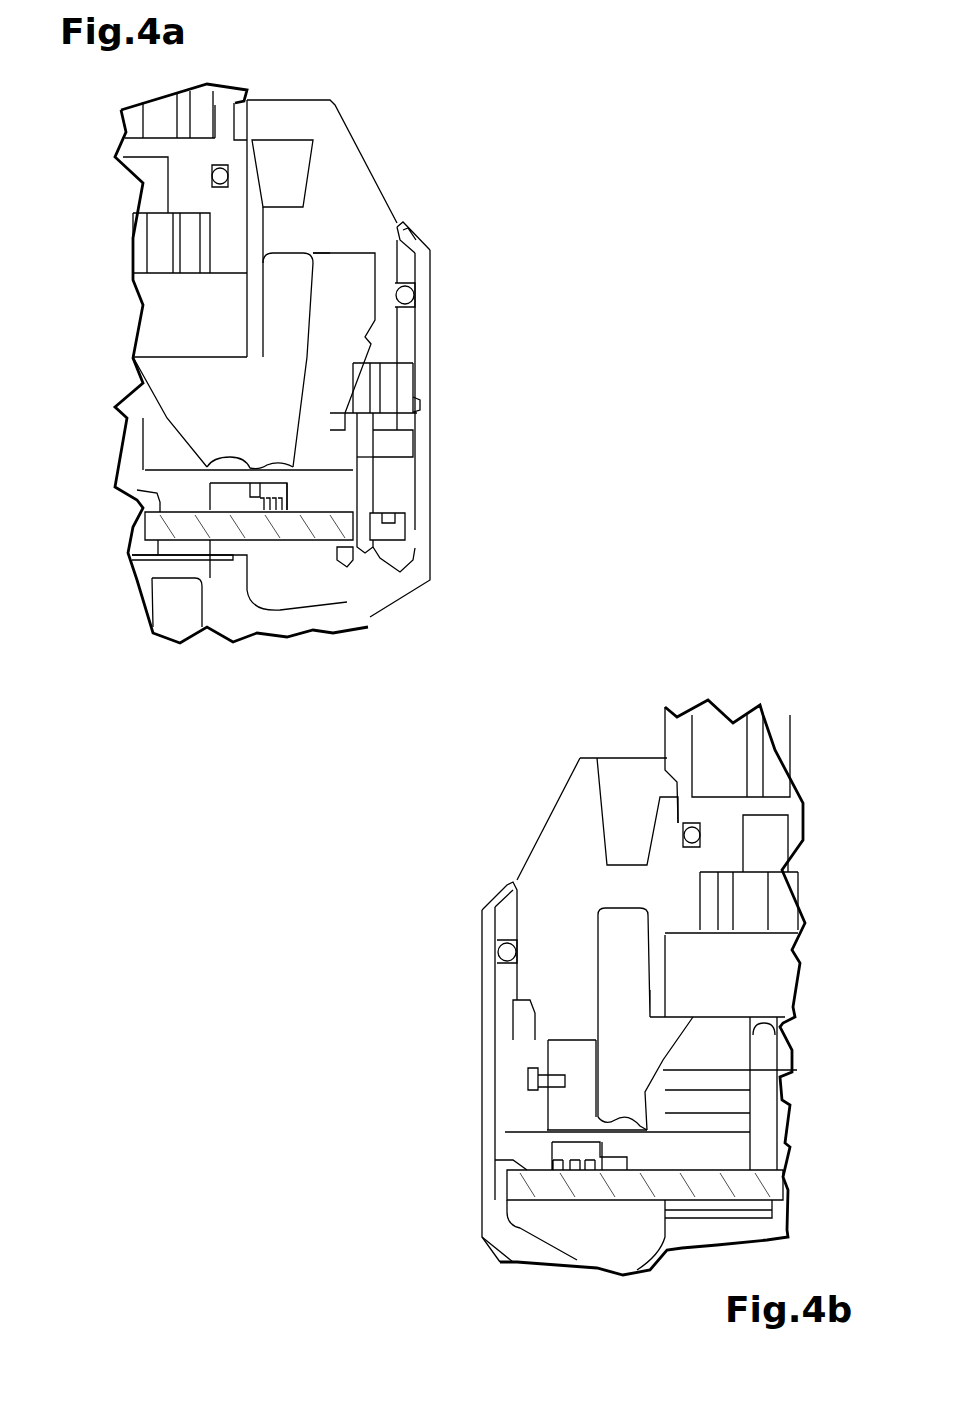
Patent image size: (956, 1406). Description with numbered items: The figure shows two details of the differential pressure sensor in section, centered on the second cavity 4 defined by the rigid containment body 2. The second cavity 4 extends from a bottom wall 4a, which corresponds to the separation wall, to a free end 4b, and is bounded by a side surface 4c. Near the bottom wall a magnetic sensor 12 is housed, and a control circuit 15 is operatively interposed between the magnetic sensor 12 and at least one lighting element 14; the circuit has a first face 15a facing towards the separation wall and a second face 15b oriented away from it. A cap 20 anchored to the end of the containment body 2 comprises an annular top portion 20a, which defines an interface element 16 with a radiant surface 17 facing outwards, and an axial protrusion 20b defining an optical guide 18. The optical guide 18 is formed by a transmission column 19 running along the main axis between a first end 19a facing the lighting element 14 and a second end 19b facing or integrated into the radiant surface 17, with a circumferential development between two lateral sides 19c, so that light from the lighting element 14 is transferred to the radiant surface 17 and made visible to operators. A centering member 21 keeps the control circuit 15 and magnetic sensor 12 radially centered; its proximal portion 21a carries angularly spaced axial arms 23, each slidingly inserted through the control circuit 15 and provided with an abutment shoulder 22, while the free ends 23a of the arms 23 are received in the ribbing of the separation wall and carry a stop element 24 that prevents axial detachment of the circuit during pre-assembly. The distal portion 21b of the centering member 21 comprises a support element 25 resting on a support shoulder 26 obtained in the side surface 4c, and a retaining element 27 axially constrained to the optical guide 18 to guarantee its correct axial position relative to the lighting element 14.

In FIG. 4A, the containment body 2 is at (436, 327).
In FIG. 4B, the containment body 2 is at (497, 1252).
In FIG. 4A, the second cavity 4 is at (436, 273).
In FIG. 4B, the second cavity 4 is at (499, 1084).
In FIG. 4A, the bottom wall 4a is at (240, 512).
In FIG. 4B, the bottom wall 4a is at (570, 1260).
In FIG. 4A, the free end 4b is at (408, 240).
In FIG. 4B, the free end 4b is at (500, 907).
In FIG. 4A, the side surface 4c is at (411, 400).
In FIG. 4B, the side surface 4c is at (505, 1017).
In FIG. 4A, the magnetic sensor 12 is at (145, 548).
In FIG. 4B, the magnetic sensor 12 is at (767, 1205).
In FIG. 4A, the lighting element 14 is at (210, 540).
In FIG. 4B, the lighting element 14 is at (570, 1150).
In FIG. 4A, the control circuit 15 is at (316, 548).
In FIG. 4B, the control circuit 15 is at (570, 1200).
In FIG. 4A, the first face 15a is at (208, 540).
In FIG. 4B, the first face 15a is at (523, 1200).
In FIG. 4A, the second face 15b is at (140, 493).
In FIG. 4B, the second face 15b is at (527, 1170).
In FIG. 4B, the interface element 16 is at (617, 850).
In FIG. 4B, the radiant surface 17 is at (540, 817).
In FIG. 4A, the optical guide 18 is at (360, 273).
In FIG. 4A, the transmission column 19 is at (223, 360).
In FIG. 4A, the first end 19a is at (227, 460).
In FIG. 4A, the second end 19b is at (343, 248).
In FIG. 4A, the lateral sides 19c is at (332, 230).
In FIG. 4B, the cap 20 is at (570, 753).
In FIG. 4B, the annular top portion 20a is at (532, 847).
In FIG. 4B, the axial protrusion 20b is at (613, 988).
In FIG. 4A, the centering member 21 is at (413, 407).
In FIG. 4A, the proximal portion 21a is at (387, 517).
In FIG. 4A, the distal portion 21b is at (390, 400).
In FIG. 4A, the abutment shoulder 22 is at (347, 553).
In FIG. 4A, the axial arms 23 is at (392, 497).
In FIG. 4A, the free ends 23a is at (397, 590).
In FIG. 4A, the stop element 24 is at (347, 557).
In FIG. 4A, the support element 25 is at (407, 440).
In FIG. 4A, the support shoulder 26 is at (392, 478).
In FIG. 4A, the retaining element 27 is at (390, 415).